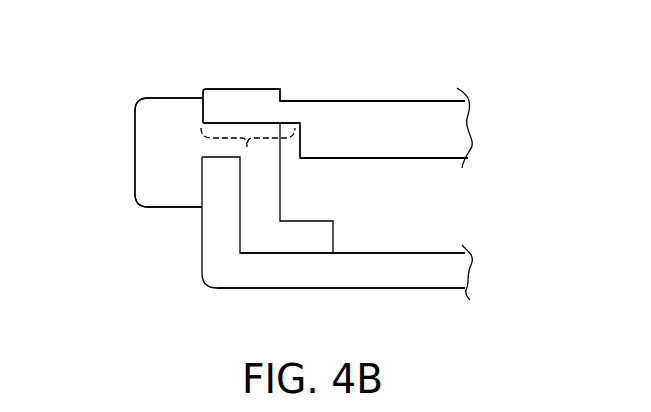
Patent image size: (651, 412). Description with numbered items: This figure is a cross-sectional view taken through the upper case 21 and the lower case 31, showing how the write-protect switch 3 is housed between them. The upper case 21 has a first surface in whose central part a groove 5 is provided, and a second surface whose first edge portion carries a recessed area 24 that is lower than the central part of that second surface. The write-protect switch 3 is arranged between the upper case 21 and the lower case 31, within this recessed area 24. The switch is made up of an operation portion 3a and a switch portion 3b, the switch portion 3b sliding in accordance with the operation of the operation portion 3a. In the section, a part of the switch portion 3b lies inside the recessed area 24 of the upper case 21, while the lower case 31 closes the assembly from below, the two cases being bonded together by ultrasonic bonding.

The write-protect switch 3 is at (150, 85).
The operation portion 3a is at (138, 170).
The switch portion 3b is at (302, 237).
The groove 5 is at (328, 102).
The upper case 21 is at (438, 110).
The recessed area 24 is at (247, 147).
The lower case 31 is at (380, 273).